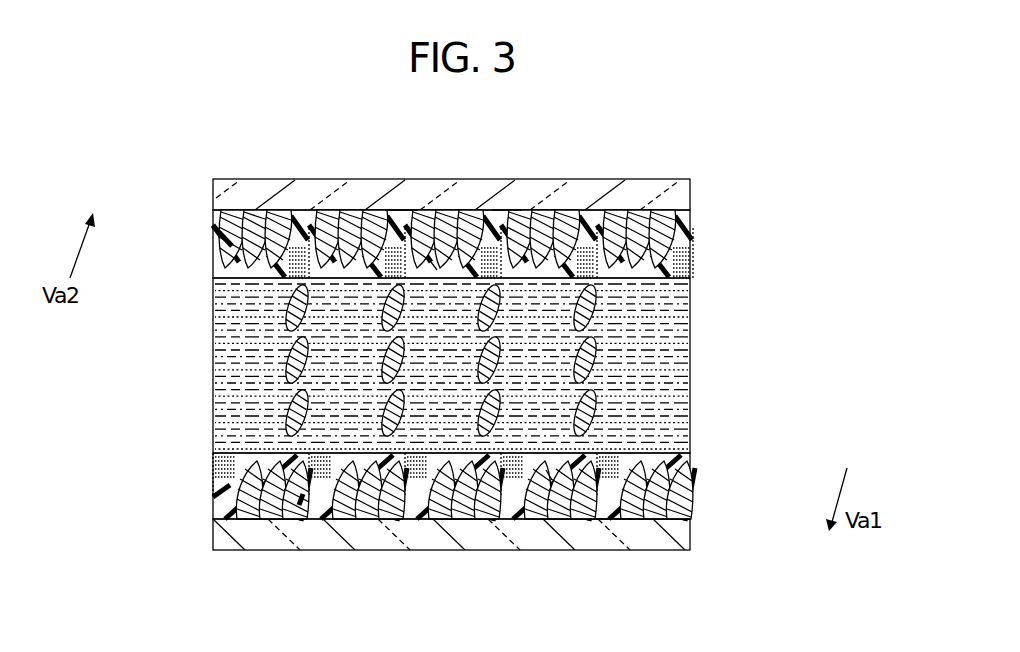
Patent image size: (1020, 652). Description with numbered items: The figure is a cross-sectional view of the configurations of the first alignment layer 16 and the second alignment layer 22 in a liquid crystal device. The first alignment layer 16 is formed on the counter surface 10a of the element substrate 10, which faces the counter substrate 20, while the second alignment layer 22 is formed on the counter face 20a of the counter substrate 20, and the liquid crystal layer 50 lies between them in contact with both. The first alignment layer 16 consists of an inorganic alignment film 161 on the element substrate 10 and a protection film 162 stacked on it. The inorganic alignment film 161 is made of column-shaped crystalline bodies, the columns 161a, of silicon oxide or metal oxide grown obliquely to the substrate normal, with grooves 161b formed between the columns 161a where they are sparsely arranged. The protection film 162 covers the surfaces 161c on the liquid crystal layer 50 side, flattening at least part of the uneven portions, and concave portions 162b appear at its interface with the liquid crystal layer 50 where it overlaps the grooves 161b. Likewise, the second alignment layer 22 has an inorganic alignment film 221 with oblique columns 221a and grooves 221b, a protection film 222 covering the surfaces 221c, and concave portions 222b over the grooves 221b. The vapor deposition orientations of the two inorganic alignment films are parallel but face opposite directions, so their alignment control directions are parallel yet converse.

The element substrate 10 is at (682, 531).
The counter surface 10a is at (214, 497).
The first alignment layer 16 is at (708, 459).
The inorganic alignment film 161 is at (694, 495).
The columns 161a is at (622, 519).
The grooves 161b is at (602, 519).
The surfaces 161c is at (548, 472).
The protection film 162 is at (684, 436).
The concave portions 162b is at (301, 505).
The counter substrate 20 is at (680, 200).
The counter face 20a is at (213, 226).
The second alignment layer 22 is at (203, 262).
The inorganic alignment film 221 is at (694, 220).
The columns 221a is at (686, 282).
The grooves 221b is at (402, 217).
The surfaces 221c is at (436, 270).
The protection film 222 is at (684, 250).
The concave portions 222b is at (505, 217).
The liquid crystal layer 50 is at (213, 372).